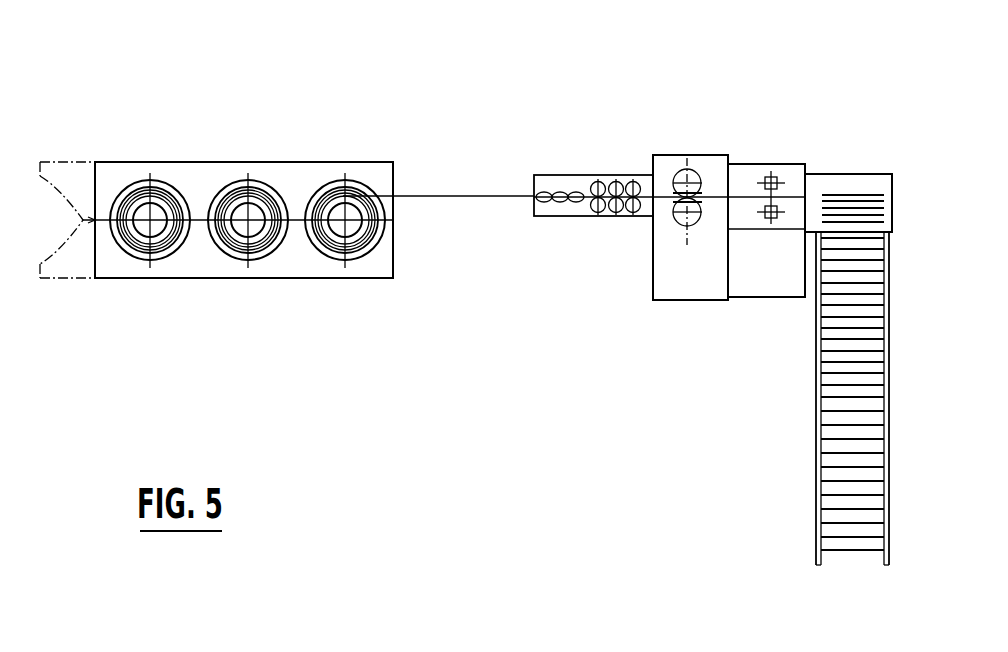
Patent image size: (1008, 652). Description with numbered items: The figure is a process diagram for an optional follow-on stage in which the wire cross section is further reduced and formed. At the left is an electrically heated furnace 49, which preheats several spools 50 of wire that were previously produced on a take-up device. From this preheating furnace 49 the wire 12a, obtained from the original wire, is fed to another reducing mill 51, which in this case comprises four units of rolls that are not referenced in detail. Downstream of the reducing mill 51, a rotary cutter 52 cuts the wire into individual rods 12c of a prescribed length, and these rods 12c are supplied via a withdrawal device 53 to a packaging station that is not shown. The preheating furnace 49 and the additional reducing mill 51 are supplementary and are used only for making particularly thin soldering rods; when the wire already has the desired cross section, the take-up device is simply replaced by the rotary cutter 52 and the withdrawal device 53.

The electrically heated furnace 49 is at (281, 148).
The spools of wire 50 is at (336, 251).
The wire 12a is at (455, 195).
The reducing mill 51 is at (662, 343).
The rotary cutter 52 is at (762, 164).
The rods 12c is at (852, 176).
The withdrawal device 53 is at (843, 419).